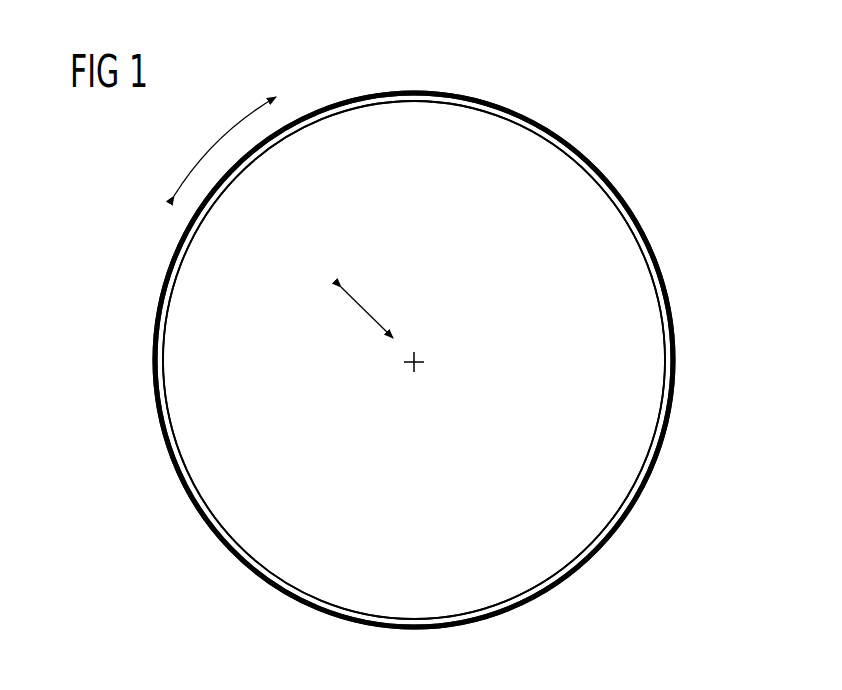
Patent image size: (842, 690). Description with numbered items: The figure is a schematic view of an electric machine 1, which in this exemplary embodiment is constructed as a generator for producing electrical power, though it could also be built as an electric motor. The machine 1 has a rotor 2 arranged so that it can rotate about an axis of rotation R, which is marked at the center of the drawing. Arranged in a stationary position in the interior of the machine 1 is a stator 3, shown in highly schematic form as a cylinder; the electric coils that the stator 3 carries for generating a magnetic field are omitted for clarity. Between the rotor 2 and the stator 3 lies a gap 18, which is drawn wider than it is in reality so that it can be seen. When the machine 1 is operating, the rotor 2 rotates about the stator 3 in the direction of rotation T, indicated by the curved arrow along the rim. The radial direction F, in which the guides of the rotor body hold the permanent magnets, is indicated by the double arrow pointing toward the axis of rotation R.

The electric machine 1 is at (680, 108).
The rotor 2 is at (578, 134).
The stator 3 is at (470, 123).
The gap 18 is at (506, 120).
The direction of rotation T is at (212, 142).
The radial direction F is at (377, 318).
The axis of rotation R is at (418, 358).